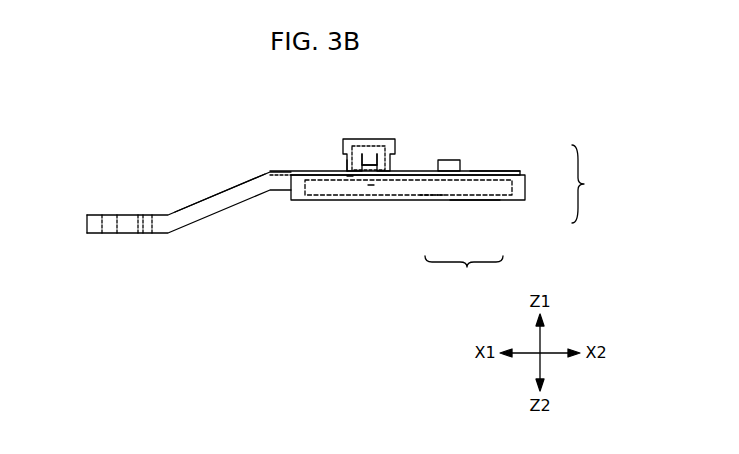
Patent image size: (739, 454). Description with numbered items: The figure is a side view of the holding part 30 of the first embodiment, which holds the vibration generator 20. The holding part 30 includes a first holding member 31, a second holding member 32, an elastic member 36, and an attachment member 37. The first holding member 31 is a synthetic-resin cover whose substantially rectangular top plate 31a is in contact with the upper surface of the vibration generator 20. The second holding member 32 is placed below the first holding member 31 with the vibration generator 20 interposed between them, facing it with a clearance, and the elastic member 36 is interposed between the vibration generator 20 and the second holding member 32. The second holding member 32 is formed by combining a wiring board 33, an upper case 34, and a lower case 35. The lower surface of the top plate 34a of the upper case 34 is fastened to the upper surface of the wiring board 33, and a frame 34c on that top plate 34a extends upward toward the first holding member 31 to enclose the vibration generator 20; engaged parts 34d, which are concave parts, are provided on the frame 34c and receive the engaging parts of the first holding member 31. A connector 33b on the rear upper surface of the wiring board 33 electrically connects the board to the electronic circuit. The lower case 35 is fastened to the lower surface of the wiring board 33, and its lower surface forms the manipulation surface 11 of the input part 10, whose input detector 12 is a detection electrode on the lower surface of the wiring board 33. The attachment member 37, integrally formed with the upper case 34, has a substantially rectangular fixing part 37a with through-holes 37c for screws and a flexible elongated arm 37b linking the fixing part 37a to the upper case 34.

The input part 10 is at (464, 271).
The manipulation surface 11 is at (464, 201).
The input detector 12 is at (430, 200).
The vibration generator 20 is at (350, 177).
The holding part 30 is at (207, 106).
The first holding member 31 is at (371, 142).
The top plate 31a is at (376, 162).
The second holding member 32 is at (588, 184).
The wiring board 33 is at (513, 187).
The connector 33b is at (450, 160).
The upper case 34 is at (509, 172).
The top plate 34a is at (476, 172).
The frame 34c is at (345, 163).
The engaged parts 34d is at (362, 150).
The lower case 35 is at (506, 201).
The elastic member 36 is at (371, 186).
The attachment member 37 is at (241, 191).
The fixing part 37a is at (127, 222).
The arm 37b is at (204, 200).
The through-holes 37c is at (143, 220).